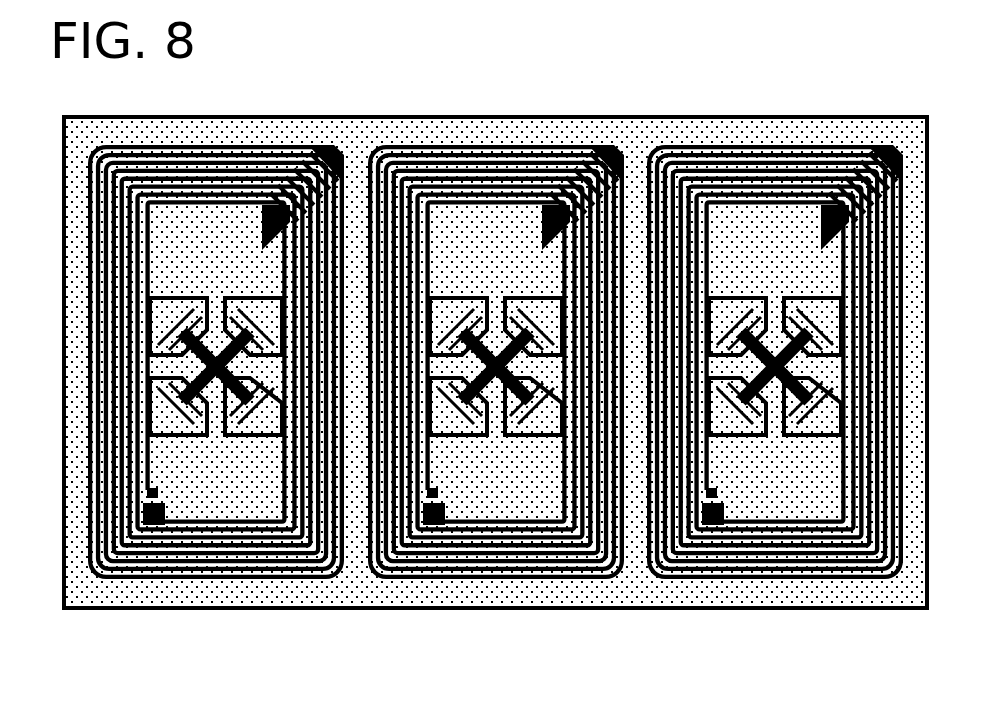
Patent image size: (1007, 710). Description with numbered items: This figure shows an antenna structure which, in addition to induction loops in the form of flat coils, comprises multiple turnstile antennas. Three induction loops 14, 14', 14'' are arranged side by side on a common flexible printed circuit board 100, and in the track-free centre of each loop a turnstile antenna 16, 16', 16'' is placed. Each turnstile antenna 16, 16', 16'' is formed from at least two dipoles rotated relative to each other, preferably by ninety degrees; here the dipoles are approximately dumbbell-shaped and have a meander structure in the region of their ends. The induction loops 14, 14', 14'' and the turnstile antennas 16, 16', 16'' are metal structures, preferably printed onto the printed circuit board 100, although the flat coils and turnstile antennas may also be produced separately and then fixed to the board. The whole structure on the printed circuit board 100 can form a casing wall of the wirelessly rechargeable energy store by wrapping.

The flexible printed circuit board 100 is at (115, 588).
The induction loop 14 is at (217, 417).
The turnstile antenna 16 is at (255, 494).
The induction loop 14' is at (497, 417).
The turnstile antenna 16' is at (496, 494).
The induction loop 14'' is at (776, 417).
The turnstile antenna 16'' is at (797, 494).